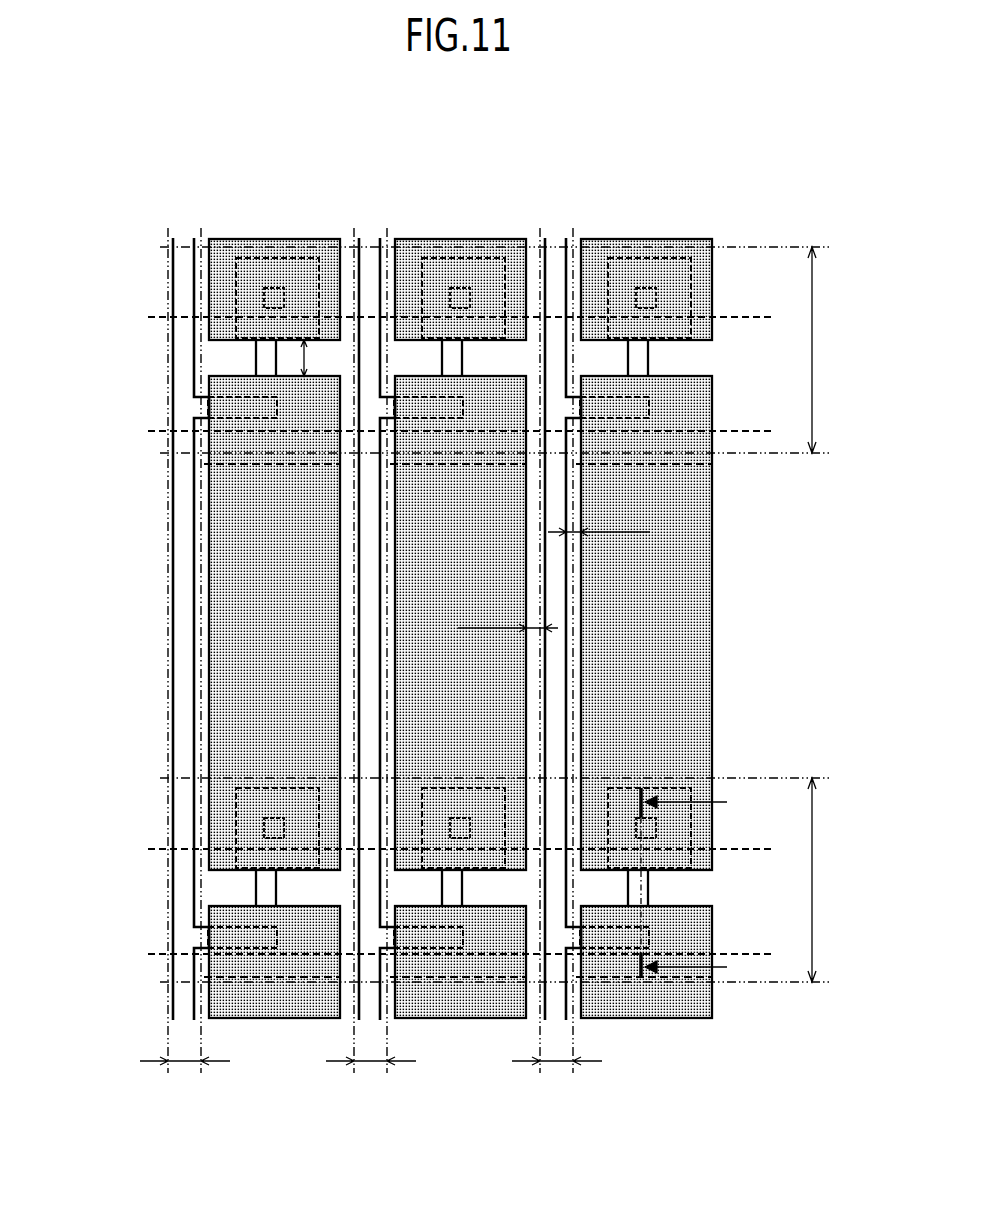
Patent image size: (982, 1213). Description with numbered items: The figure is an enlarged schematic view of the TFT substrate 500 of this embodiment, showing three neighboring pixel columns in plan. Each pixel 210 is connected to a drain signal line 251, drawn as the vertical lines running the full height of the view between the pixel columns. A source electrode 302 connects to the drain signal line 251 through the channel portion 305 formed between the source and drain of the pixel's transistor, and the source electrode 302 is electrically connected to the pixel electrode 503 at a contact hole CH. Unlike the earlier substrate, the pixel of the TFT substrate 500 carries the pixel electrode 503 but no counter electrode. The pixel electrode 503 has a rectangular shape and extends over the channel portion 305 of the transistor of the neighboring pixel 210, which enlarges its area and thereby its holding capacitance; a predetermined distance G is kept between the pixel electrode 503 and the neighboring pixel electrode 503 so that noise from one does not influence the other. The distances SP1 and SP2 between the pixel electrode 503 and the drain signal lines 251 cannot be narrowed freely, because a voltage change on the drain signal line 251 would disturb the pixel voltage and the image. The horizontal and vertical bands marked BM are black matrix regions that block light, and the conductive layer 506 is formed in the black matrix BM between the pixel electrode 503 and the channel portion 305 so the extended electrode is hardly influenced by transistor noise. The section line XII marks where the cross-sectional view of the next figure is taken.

The TFT substrate 500 is at (455, 157).
The drain signal line 251 is at (183, 293).
The channel portion 305 is at (248, 386).
The pixel 210 is at (192, 502).
The pixel electrode 503 is at (233, 580).
The source electrode 302 is at (265, 883).
The conductive layer 506 is at (768, 360).
The contact hole CH is at (283, 257).
The predetermined distance G is at (315, 358).
The black matrix region BM is at (494, 675).
The distance between pixel electrode and drain signal line SP1 is at (599, 522).
The distance between pixel electrode and drain signal line SP2 is at (508, 618).
The section line XII is at (700, 885).